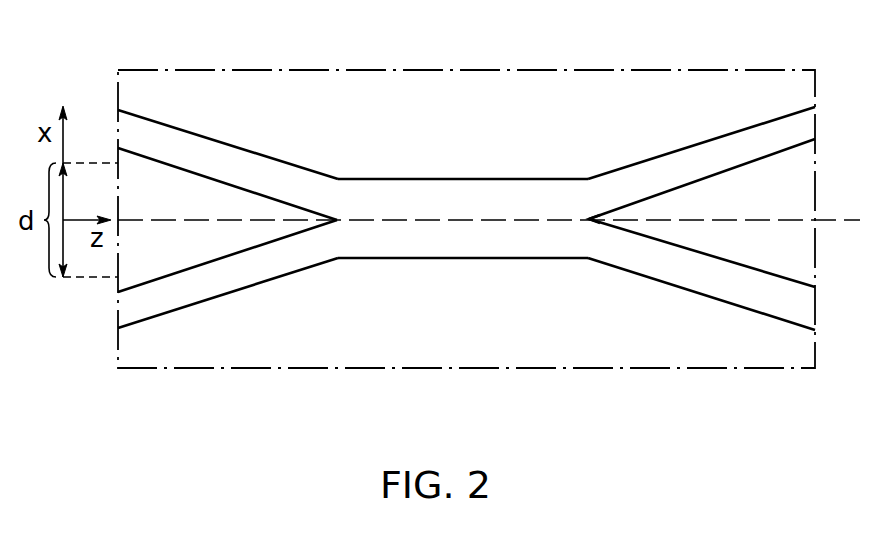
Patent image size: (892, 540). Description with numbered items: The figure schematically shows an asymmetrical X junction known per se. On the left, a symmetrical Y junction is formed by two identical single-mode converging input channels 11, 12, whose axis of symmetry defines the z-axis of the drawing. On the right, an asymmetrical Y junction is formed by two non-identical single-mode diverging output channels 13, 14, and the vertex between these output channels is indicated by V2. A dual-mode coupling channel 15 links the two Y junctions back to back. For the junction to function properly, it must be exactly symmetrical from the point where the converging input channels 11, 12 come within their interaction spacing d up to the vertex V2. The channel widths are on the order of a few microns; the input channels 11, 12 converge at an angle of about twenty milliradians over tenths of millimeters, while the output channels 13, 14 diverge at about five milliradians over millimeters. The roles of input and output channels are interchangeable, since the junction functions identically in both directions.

The converging input channel 11 is at (223, 165).
The converging input channel 12 is at (245, 275).
The diverging output channel 13 is at (698, 162).
The diverging output channel 14 is at (660, 263).
The dual-mode coupling channel 15 is at (452, 197).
The vertex of the asymmetrical Y junction V2 is at (592, 216).